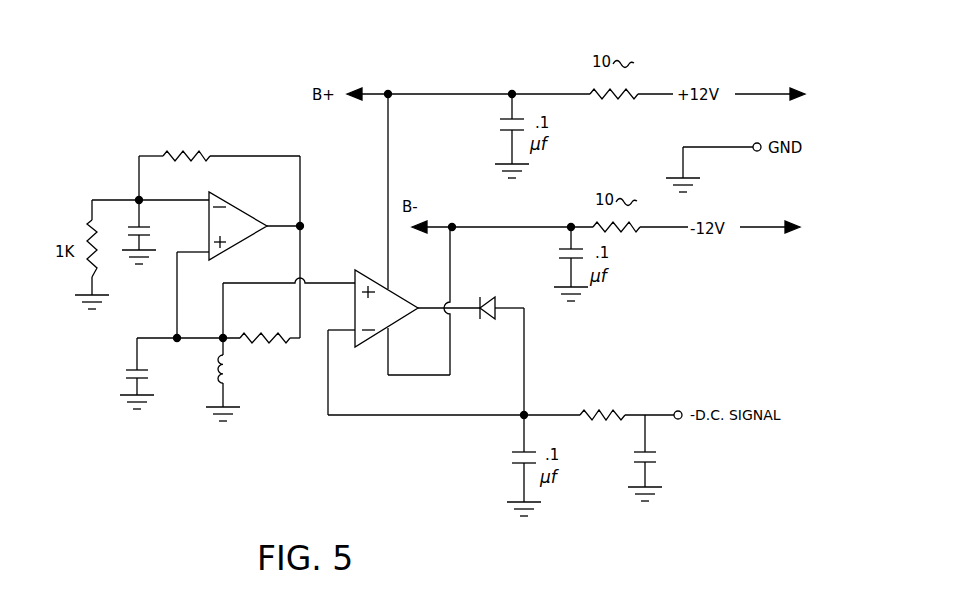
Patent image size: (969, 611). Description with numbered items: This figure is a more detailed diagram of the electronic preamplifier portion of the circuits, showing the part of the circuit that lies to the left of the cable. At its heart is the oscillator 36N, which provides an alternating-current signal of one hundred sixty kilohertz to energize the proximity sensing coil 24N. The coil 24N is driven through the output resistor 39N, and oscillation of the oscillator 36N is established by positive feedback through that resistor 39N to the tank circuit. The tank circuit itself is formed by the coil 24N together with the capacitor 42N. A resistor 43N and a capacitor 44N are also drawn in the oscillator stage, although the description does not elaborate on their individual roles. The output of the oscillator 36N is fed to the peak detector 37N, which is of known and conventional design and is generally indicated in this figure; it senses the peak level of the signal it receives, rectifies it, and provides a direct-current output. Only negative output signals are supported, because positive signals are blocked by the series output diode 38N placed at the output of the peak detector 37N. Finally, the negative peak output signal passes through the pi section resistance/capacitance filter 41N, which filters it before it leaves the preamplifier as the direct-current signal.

The 100K feedback resistor 43N is at (166, 152).
The oscillator 36N is at (231, 202).
The 0.0 microfarad capacitor 44N is at (104, 252).
The capacitor 42N is at (127, 373).
The proximity sensing coil 24N is at (212, 383).
The output resistor 39N is at (258, 346).
The peak detector 37N is at (392, 422).
The series output diode 38N is at (493, 297).
The pi section resistance/capacitance filter 41N is at (572, 392).